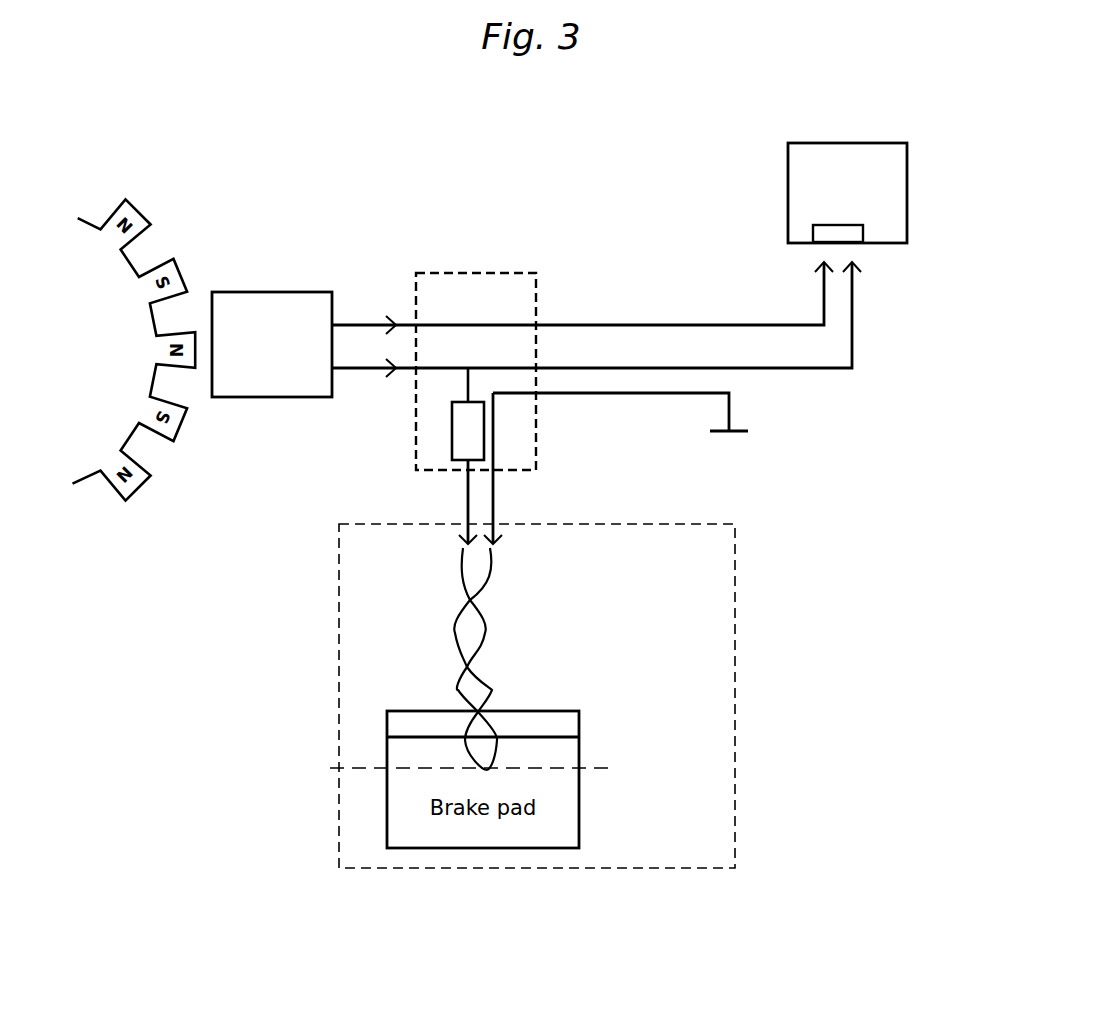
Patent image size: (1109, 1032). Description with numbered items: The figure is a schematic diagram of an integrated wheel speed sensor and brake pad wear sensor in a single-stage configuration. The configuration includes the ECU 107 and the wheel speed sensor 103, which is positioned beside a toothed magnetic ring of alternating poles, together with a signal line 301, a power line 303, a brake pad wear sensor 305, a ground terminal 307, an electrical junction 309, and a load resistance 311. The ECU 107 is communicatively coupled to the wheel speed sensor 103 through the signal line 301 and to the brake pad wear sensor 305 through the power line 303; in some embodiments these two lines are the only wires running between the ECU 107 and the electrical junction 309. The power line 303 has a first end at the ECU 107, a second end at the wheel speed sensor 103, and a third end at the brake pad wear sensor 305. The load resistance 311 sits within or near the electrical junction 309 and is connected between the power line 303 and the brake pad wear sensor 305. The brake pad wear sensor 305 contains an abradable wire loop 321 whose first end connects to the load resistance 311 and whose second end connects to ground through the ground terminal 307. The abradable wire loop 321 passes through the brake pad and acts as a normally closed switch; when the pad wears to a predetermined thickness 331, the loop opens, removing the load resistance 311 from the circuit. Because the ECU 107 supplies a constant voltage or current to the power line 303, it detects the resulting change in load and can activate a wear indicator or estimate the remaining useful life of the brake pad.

The wheel speed sensor 103 is at (292, 398).
The ECU 107 is at (907, 175).
The signal line 301 is at (697, 323).
The power line 303 is at (820, 372).
The brake pad wear sensor 305 is at (339, 700).
The ground terminal 307 is at (728, 422).
The electrical junction 309 is at (537, 297).
The load resistance 311 is at (450, 433).
The abradable wire loop 321 is at (455, 680).
The predetermined thickness 331 is at (490, 768).